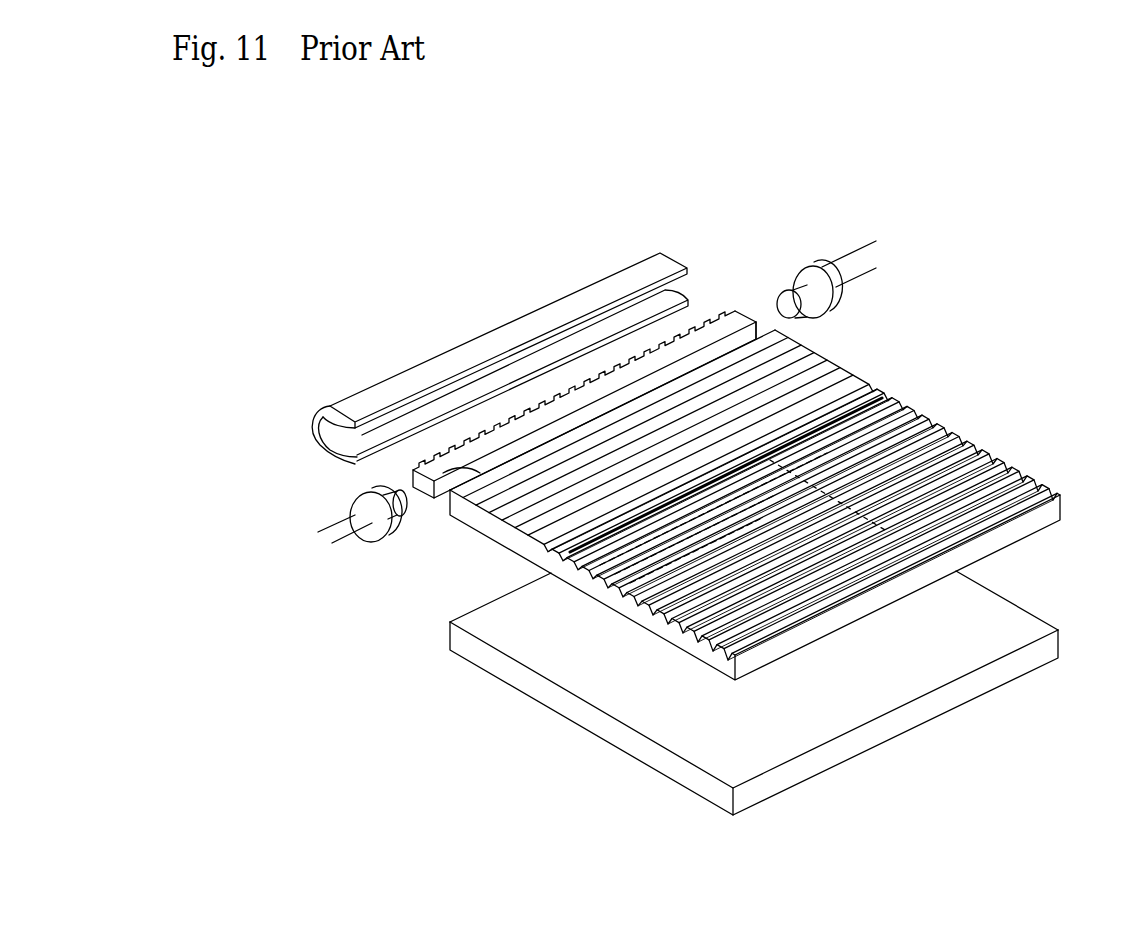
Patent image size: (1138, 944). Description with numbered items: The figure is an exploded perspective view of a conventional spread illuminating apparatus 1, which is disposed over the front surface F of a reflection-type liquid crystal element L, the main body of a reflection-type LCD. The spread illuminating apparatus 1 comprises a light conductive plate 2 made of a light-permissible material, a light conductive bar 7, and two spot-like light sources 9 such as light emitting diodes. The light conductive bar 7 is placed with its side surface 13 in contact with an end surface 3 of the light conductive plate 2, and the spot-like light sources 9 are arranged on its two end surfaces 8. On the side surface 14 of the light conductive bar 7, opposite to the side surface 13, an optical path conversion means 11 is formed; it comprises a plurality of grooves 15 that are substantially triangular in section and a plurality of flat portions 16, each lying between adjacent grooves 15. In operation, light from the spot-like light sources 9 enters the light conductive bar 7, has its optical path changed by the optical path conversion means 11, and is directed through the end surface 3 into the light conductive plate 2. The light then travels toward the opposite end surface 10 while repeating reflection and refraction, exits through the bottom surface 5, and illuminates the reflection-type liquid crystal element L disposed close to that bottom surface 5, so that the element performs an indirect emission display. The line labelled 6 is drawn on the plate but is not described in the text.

The spread illuminating apparatus 1 is at (1012, 245).
The light conductive plate 2 is at (603, 593).
The end surface 3 is at (437, 516).
The bottom surface 5 is at (560, 567).
The optical fiber 6 is at (875, 428).
The light conductive bar 7 is at (733, 310).
The end surfaces 8 is at (760, 322).
The spot-like light sources 9 is at (820, 268).
The end surface 10 is at (1010, 522).
The optical path conversion means 11 is at (500, 324).
The side surface 13 is at (433, 457).
The side surface 14 is at (417, 457).
The grooves 15 is at (518, 450).
The flat portions 16 is at (557, 400).
The front surface F is at (940, 653).
The reflection-type liquid crystal element L is at (918, 730).